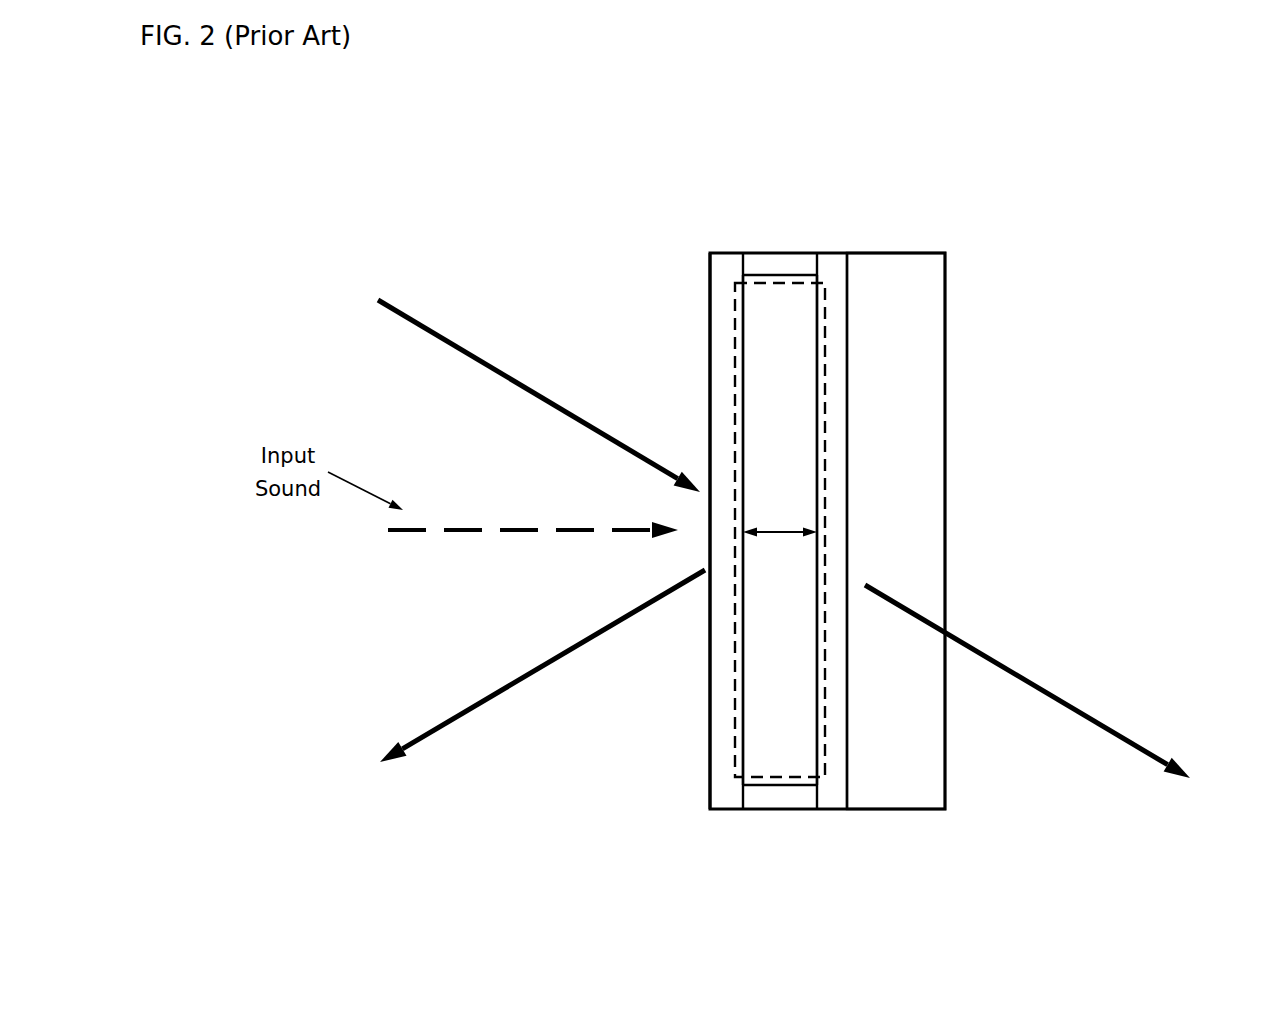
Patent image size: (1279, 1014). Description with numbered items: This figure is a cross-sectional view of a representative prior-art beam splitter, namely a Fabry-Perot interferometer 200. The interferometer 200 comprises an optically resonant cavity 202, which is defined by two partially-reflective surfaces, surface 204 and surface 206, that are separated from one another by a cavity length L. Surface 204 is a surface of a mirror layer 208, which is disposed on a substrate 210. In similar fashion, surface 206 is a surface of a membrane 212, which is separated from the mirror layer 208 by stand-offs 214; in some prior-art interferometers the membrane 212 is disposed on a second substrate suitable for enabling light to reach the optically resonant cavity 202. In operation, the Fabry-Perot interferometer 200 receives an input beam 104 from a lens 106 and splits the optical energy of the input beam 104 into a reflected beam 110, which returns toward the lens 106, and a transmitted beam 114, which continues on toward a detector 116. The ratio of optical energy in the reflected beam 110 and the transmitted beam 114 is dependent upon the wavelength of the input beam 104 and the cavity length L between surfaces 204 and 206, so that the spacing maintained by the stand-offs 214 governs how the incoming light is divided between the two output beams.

The Fabry-Perot interferometer 200 is at (542, 103).
The input beam 104 is at (491, 396).
The lens 106 is at (349, 515).
The reflected beam 110 is at (493, 666).
The transmitted beam 114 is at (1027, 681).
The detector 116 is at (1220, 814).
The optically resonant cavity 202 is at (724, 530).
The surface 204 is at (876, 530).
The surface 206 is at (683, 530).
The mirror layer 208 is at (876, 510).
The substrate 210 is at (937, 289).
The membrane 212 is at (683, 510).
The stand-offs 214 is at (840, 532).
The cavity length L is at (827, 482).